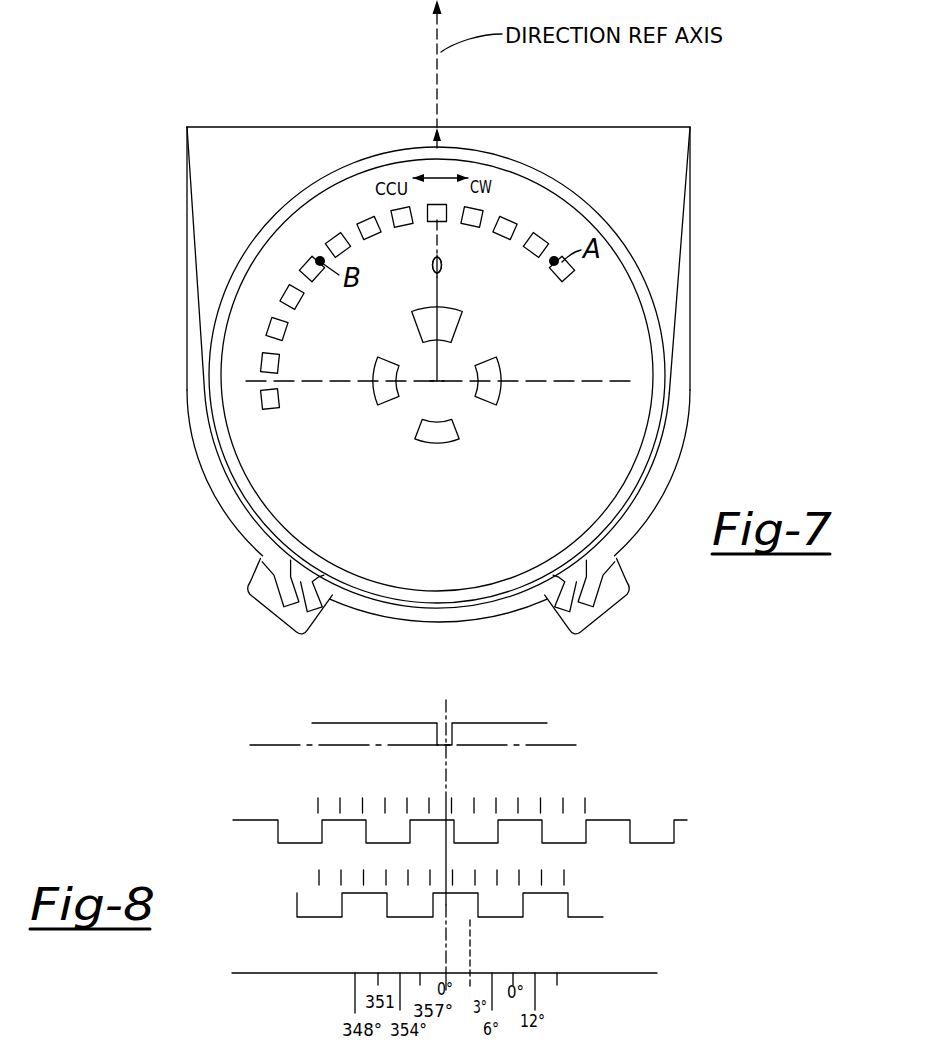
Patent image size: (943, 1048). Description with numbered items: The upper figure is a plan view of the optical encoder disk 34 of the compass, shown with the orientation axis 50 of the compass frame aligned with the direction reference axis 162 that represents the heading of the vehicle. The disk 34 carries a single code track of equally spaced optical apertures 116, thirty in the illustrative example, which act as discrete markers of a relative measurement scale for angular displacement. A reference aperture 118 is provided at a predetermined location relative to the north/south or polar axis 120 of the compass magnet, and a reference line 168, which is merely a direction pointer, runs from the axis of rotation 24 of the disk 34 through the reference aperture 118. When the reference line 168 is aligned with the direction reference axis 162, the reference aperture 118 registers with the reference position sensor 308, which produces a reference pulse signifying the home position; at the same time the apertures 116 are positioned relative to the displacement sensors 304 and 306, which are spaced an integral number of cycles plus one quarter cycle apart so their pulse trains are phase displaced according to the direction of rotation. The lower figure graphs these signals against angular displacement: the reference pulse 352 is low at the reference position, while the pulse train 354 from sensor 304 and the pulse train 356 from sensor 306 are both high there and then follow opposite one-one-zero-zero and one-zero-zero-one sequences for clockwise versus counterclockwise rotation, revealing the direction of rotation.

In FIG. 7, the direction reference axis 162 is at (468, 78).
In FIG. 7, the orientation axis 50 is at (441, 134).
In FIG. 7, the encoder disk 34 is at (637, 418).
In FIG. 7, the apertures 116 is at (305, 262).
In FIG. 7, the displacement sensor 306 is at (320, 260).
In FIG. 7, the displacement sensor 304 is at (554, 262).
In FIG. 7, the reference position sensor 308 is at (432, 266).
In FIG. 7, the reference aperture 118 is at (441, 259).
In FIG. 7, the reference line 168 is at (440, 313).
In FIG. 7, the axis of rotation 24 is at (443, 386).
In FIG. 7, the north/south axis 120 is at (348, 383).
In FIG. 8, the reference pulse 352 is at (452, 734).
In FIG. 8, the pulse train 354 is at (568, 784).
In FIG. 8, the pulse train 356 is at (581, 891).